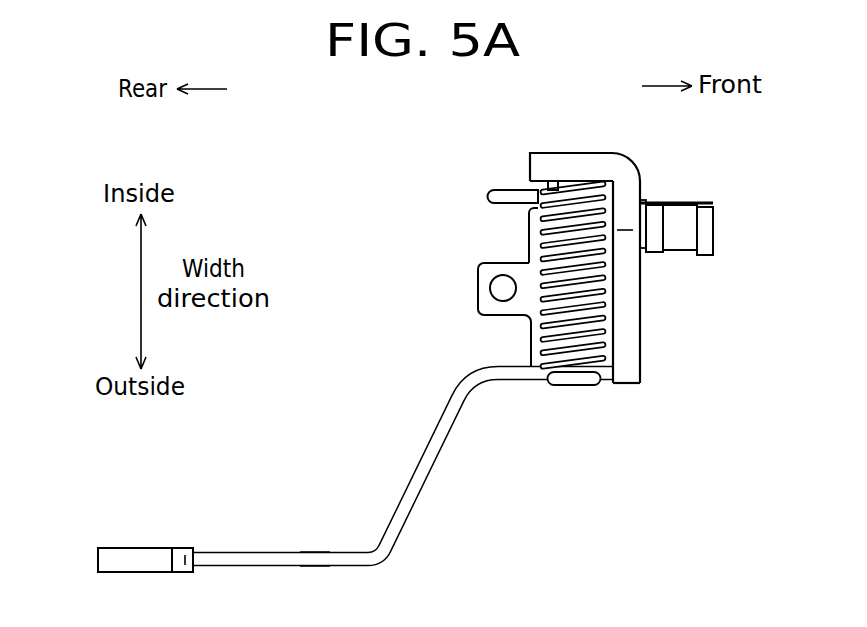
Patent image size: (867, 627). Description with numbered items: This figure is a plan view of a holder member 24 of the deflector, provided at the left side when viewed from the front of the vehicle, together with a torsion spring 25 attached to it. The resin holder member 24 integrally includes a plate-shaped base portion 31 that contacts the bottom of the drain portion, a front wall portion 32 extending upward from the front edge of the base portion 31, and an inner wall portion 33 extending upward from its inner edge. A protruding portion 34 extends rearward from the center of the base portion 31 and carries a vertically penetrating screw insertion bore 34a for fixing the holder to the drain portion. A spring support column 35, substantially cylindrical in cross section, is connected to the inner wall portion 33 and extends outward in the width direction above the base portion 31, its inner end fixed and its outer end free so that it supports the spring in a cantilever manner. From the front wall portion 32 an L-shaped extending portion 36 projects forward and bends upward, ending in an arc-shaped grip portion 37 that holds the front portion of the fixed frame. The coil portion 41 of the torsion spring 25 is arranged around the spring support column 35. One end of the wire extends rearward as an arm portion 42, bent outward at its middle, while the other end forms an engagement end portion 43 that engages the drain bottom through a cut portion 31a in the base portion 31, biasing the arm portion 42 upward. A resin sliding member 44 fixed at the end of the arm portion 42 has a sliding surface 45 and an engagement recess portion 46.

The holder member 24 is at (613, 270).
The torsion spring 25 is at (422, 443).
The base portion 31 is at (607, 383).
The cut portion 31a is at (528, 212).
The front wall portion 32 is at (637, 300).
The inner wall portion 33 is at (607, 160).
The protruding portion 34 is at (482, 265).
The screw insertion bore 34a is at (491, 292).
The spring support column 35 is at (555, 183).
The extending portion 36 is at (645, 198).
The grip portion 37 is at (713, 233).
The coil portion 41 is at (540, 334).
The arm portion 42 is at (313, 552).
The engagement end portion 43 is at (502, 190).
The sliding member 44 is at (140, 547).
The sliding surface 45 is at (128, 537).
The engagement recess portion 46 is at (178, 550).